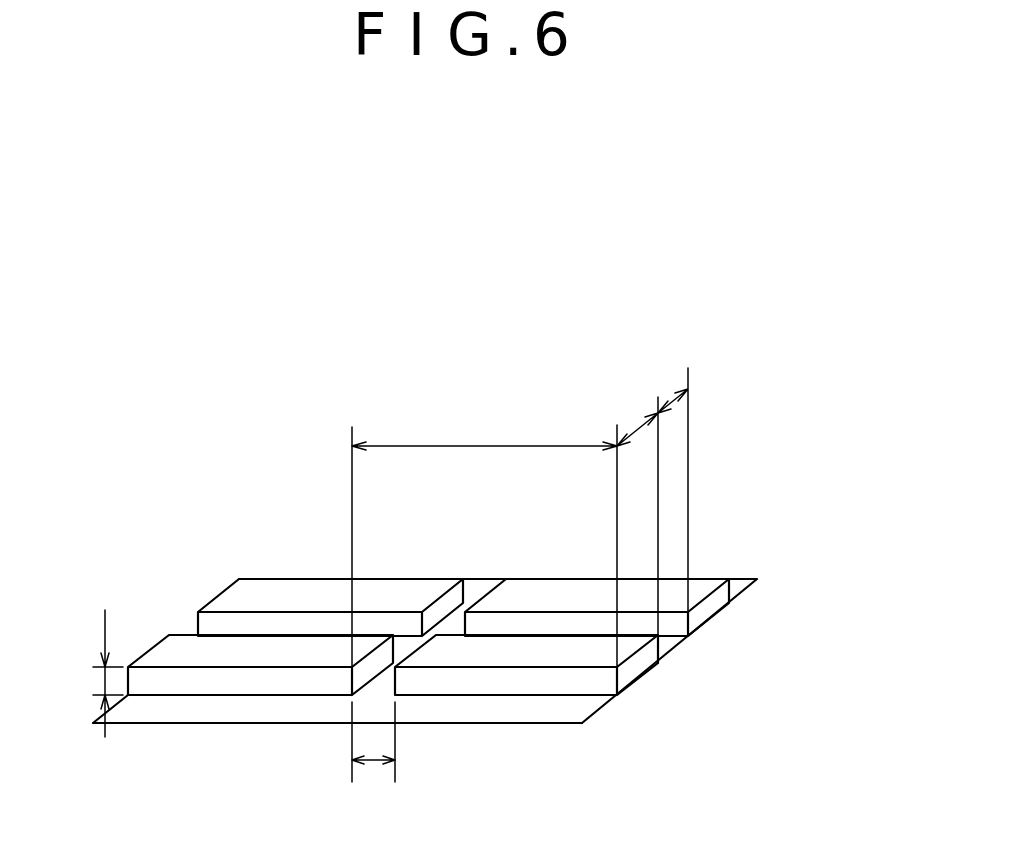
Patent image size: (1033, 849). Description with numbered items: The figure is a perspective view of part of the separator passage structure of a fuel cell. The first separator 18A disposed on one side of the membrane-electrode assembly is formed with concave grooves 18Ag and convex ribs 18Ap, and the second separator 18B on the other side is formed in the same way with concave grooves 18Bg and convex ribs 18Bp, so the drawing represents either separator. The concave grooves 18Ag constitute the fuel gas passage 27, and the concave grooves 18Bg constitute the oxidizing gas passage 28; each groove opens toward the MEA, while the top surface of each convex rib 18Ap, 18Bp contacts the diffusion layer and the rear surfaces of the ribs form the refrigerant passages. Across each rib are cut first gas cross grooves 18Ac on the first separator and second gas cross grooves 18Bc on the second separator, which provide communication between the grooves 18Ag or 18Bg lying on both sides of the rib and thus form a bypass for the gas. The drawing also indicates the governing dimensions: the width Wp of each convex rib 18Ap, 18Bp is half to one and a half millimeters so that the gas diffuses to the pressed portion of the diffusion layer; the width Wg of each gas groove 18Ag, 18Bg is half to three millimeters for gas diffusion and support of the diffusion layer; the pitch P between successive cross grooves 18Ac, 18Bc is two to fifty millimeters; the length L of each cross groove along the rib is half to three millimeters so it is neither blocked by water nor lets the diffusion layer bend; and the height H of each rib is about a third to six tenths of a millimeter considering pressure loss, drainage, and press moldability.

The first separator 18A is at (512, 604).
The second separator 18B is at (512, 604).
The first gas cross grooves 18Ac is at (464, 604).
The second gas cross grooves 18Bc is at (372, 687).
The convex ribs 18Ap is at (617, 672).
The convex ribs 18Bp is at (640, 648).
The concave grooves 18Ag is at (513, 674).
The concave grooves 18Bg is at (578, 707).
The fuel gas passage 27 is at (337, 736).
The oxidizing gas passage 28 is at (177, 707).
The pitch P is at (487, 446).
The width of convex rib Wp is at (628, 436).
The width of gas groove Wg is at (670, 402).
The length of gas cross groove L is at (373, 760).
The height of convex rib H is at (105, 680).